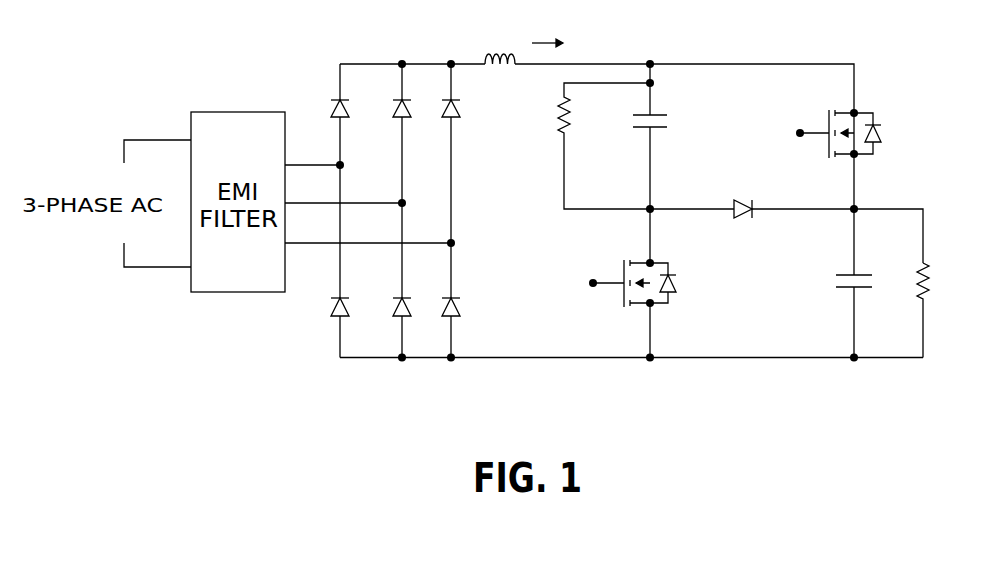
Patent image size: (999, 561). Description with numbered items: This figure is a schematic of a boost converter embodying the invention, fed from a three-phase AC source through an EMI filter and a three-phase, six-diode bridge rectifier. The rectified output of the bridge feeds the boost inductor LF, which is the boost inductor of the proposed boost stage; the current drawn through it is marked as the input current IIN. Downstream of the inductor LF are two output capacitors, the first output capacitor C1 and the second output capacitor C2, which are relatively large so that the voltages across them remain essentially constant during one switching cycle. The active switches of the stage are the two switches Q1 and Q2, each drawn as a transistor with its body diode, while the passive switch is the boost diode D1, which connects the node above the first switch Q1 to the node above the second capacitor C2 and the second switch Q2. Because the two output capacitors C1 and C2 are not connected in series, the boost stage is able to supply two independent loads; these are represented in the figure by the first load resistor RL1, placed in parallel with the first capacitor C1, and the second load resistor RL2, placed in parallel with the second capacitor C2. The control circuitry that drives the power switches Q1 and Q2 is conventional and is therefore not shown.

The boost inductor LF is at (500, 40).
The input current IIN is at (549, 26).
The first load resistor RL1 is at (581, 146).
The first output capacitor C1 is at (635, 120).
The boost diode D1 is at (746, 191).
The first active switch Q1 is at (627, 301).
The second active switch Q2 is at (834, 145).
The second output capacitor C2 is at (837, 283).
The second load resistor RL2 is at (948, 310).